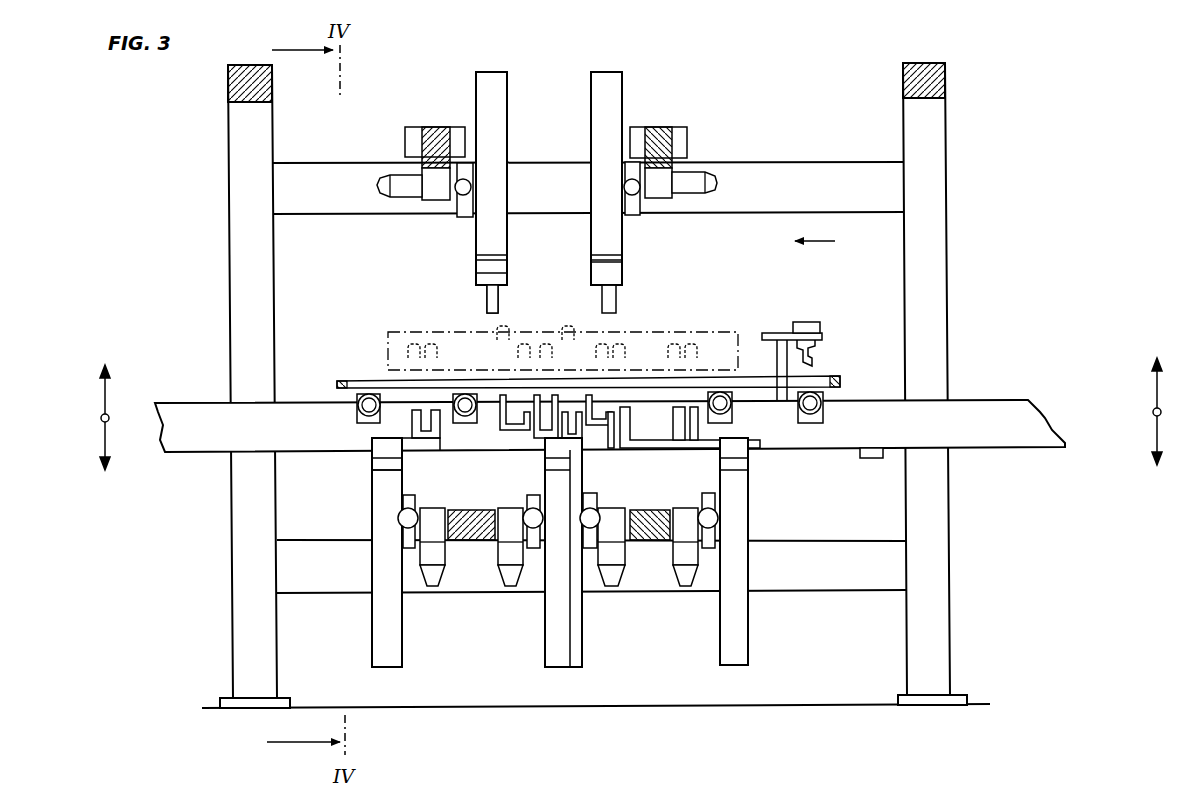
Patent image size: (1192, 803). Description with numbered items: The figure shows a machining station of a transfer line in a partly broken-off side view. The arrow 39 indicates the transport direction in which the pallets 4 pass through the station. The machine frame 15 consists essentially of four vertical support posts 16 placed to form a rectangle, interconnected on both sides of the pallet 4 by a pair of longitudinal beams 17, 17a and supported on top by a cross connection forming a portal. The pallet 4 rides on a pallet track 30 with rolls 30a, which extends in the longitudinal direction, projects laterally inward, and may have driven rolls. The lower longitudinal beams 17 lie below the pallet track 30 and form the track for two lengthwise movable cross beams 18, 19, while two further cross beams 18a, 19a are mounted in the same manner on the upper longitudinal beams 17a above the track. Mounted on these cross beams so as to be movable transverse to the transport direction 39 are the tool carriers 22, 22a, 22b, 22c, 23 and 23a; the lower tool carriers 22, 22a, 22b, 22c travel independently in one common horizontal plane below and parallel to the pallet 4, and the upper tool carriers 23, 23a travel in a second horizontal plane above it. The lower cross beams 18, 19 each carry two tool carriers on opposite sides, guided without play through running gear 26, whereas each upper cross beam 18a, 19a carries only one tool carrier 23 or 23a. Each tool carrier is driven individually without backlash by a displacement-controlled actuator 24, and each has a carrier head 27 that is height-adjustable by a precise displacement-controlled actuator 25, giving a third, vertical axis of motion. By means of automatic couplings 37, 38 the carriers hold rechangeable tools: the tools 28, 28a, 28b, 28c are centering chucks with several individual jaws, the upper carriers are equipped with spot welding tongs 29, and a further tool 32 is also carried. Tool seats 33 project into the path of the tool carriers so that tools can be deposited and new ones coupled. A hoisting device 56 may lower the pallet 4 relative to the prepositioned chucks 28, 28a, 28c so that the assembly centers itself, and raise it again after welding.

The pallet 4 is at (840, 382).
The machine frame 15 is at (998, 232).
The vertical support posts 16 is at (254, 658).
The lower longitudinal beam 17 is at (316, 605).
The upper longitudinal beam 17a is at (295, 170).
The lower cross beam 18 is at (650, 542).
The upper cross beam 18a is at (656, 135).
The lower cross beam 19 is at (466, 542).
The upper cross beam 19a is at (434, 135).
The tool carrier 22 is at (713, 483).
The tool carrier 22a is at (538, 481).
The tool carrier 22b is at (605, 481).
The tool carrier 22c is at (428, 481).
The upper tool carrier 23 is at (624, 262).
The upper tool carrier 23a is at (474, 259).
The displacement-controlled actuator 24 is at (390, 186).
The displacement-controlled actuator 25 is at (460, 202).
The running gear 26 is at (430, 192).
The carrier head 27 is at (489, 80).
The centering chuck 28 is at (672, 420).
The centering chuck 28a is at (608, 398).
The centering chuck 28b is at (598, 398).
The centering chuck 28c is at (440, 412).
The spot welding tongs 29 is at (490, 295).
The pallet track 30 is at (810, 424).
The rolls 30a is at (822, 403).
The tool 32 is at (812, 365).
The tool seat 33 is at (779, 338).
The automatic coupling 37 is at (810, 325).
The automatic coupling 38 is at (620, 270).
The transport direction 39 is at (831, 242).
The hoisting device 56 is at (626, 407).